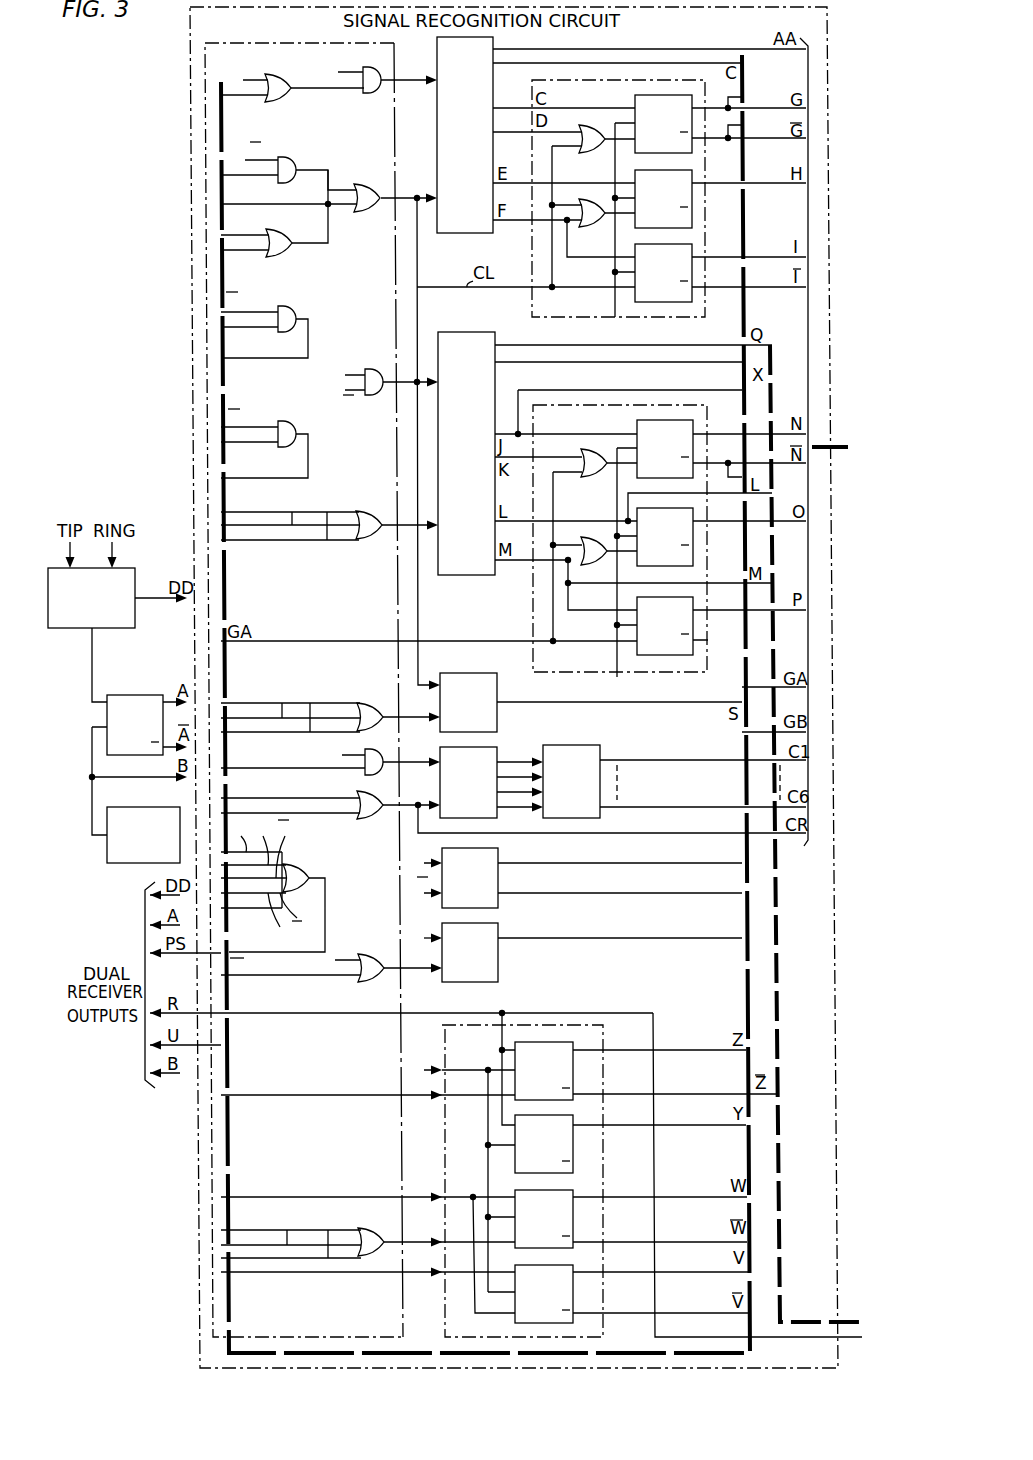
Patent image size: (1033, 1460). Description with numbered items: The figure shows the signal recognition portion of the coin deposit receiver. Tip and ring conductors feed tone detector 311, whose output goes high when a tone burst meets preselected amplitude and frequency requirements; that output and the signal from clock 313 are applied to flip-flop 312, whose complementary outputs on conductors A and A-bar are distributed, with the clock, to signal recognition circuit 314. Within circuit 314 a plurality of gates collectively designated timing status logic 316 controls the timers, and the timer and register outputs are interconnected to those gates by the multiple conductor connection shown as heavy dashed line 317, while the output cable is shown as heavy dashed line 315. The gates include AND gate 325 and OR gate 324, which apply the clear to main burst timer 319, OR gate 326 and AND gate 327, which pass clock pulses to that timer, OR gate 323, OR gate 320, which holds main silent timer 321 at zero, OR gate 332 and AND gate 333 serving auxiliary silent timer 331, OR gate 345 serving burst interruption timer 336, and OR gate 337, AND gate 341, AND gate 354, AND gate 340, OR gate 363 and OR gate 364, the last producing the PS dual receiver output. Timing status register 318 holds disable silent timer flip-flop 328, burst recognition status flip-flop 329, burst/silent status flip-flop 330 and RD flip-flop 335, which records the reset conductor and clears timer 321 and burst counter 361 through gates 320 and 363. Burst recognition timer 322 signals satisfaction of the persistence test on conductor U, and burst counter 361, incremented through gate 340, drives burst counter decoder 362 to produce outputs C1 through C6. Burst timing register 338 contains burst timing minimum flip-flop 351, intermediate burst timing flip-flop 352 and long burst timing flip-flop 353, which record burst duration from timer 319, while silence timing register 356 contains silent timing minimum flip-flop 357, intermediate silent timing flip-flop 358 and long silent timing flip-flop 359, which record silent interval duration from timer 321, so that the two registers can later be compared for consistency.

The tone detector 311 is at (136, 573).
The flip-flop 312 is at (136, 694).
The clock 313 is at (122, 865).
The signal recognition circuit 314 is at (200, 1337).
The output cable 315 is at (773, 347).
The timing status logic 316 is at (403, 1288).
The multiple conductor connection 317 is at (222, 80).
The timing status register 318 is at (603, 1037).
The main burst timer 319 is at (463, 236).
The OR gate 320 is at (365, 541).
The main silent timer 321 is at (473, 577).
The burst recognition timer 322 is at (500, 907).
The OR gate 323 is at (283, 240).
The OR gate 324 is at (366, 184).
The AND gate 325 is at (283, 160).
The OR gate 326 is at (287, 94).
The AND gate 327 is at (372, 94).
The disable silent timer flip-flop 328 is at (575, 1080).
The burst recognition status flip-flop 329 is at (574, 1192).
The burst/silent status flip-flop 330 is at (574, 1290).
The auxiliary silent timer 331 is at (499, 718).
The OR gate 332 is at (372, 703).
The AND gate 333 is at (374, 369).
The RD flip-flop 335 is at (574, 1150).
The burst interruption timer 336 is at (500, 955).
The OR gate 337 is at (381, 1230).
The burst timing register 338 is at (669, 318).
The AND gate 340 is at (384, 750).
The AND gate 341 is at (288, 307).
The OR gate 345 is at (375, 955).
The burst timing minimum flip-flop 351 is at (693, 149).
The intermediate burst timing flip-flop 352 is at (693, 198).
The long burst timing flip-flop 353 is at (693, 250).
The AND gate 354 is at (290, 421).
The silence timing register 356 is at (682, 673).
The silent timing minimum flip-flop 357 is at (636, 426).
The intermediate silent timing flip-flop 358 is at (693, 537).
The long silent timing flip-flop 359 is at (700, 641).
The burst counter 361 is at (498, 818).
The burst counter decoder 362 is at (597, 745).
The OR gate 363 is at (370, 820).
The OR gate 364 is at (297, 865).